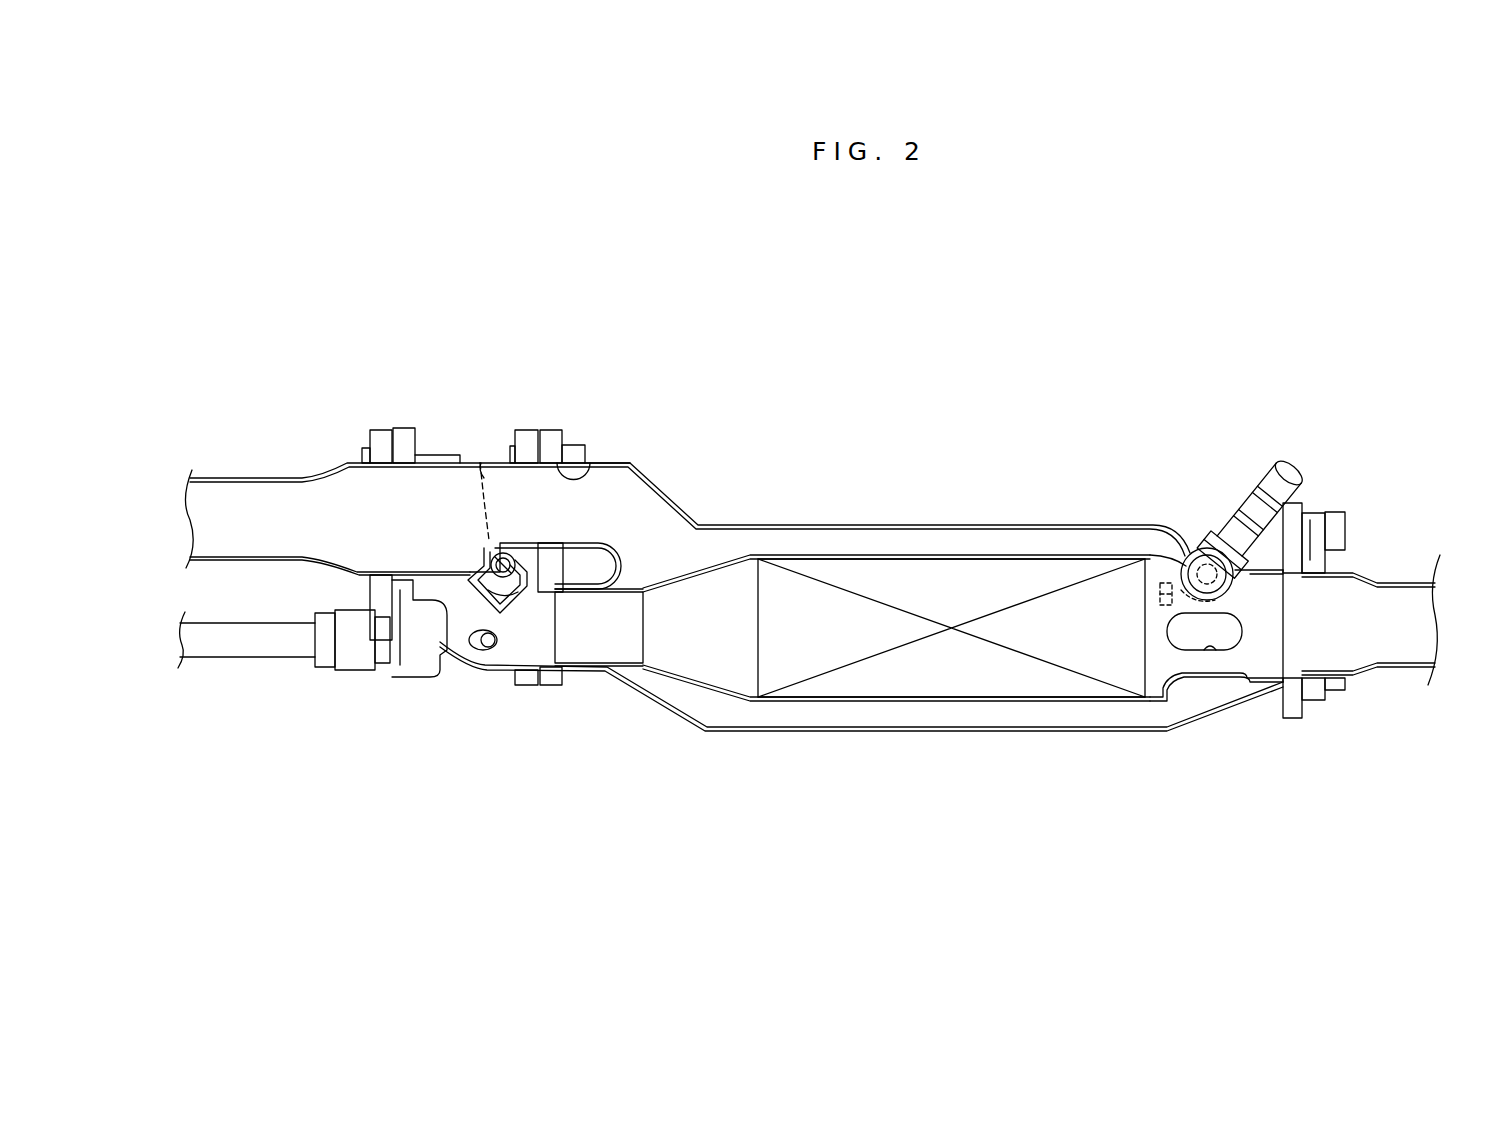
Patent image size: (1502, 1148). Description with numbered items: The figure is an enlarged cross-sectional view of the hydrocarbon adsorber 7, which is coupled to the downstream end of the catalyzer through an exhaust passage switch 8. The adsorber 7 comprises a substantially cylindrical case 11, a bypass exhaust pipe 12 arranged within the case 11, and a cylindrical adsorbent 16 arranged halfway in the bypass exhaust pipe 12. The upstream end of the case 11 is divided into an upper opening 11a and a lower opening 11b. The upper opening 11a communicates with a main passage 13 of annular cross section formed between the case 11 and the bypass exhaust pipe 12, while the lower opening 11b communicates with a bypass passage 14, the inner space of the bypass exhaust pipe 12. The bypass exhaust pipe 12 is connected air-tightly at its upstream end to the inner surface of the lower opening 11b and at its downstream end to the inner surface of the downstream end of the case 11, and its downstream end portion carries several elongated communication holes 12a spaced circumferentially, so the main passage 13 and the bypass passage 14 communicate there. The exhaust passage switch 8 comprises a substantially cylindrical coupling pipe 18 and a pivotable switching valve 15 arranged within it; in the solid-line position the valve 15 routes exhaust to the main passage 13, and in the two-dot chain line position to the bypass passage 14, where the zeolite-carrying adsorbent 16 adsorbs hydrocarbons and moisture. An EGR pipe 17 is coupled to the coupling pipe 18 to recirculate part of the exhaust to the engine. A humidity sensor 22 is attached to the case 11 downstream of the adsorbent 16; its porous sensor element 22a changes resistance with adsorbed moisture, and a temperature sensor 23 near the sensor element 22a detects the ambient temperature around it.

The hydrocarbon adsorber 7 is at (913, 360).
The exhaust passage switch 8 is at (491, 360).
The case 11 is at (985, 524).
The upper opening 11a is at (580, 475).
The lower opening 11b is at (540, 665).
The bypass exhaust pipe 12 is at (680, 675).
The communication holes 12a is at (1200, 651).
The main passage 13 is at (664, 551).
The bypass passage 14 is at (719, 636).
The switching valve 15 is at (482, 522).
The adsorbent 16 is at (975, 690).
The EGR pipe 17 is at (250, 660).
The coupling pipe 18 is at (462, 460).
The humidity sensor 22 is at (1266, 462).
The sensor element 22a is at (1190, 600).
The temperature sensor 23 is at (1163, 575).